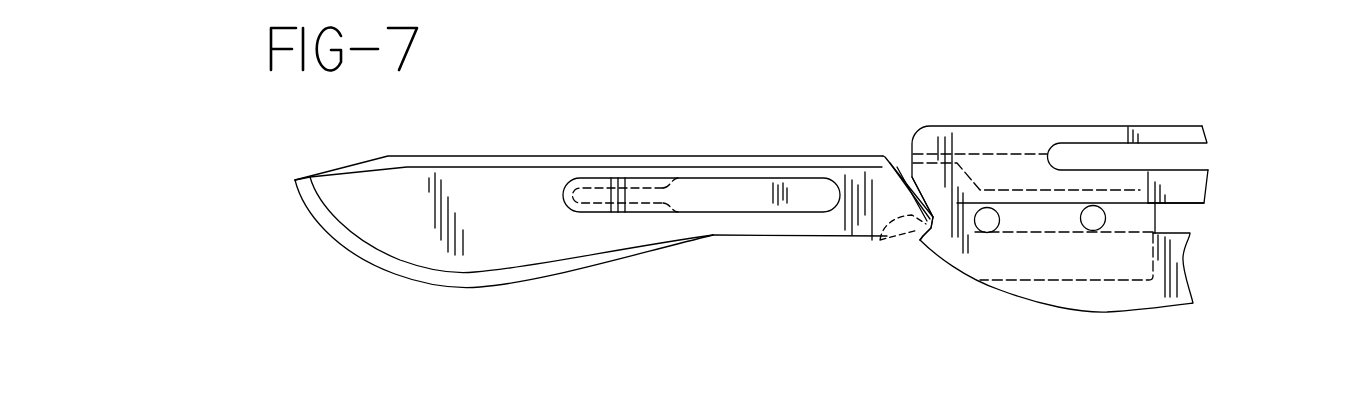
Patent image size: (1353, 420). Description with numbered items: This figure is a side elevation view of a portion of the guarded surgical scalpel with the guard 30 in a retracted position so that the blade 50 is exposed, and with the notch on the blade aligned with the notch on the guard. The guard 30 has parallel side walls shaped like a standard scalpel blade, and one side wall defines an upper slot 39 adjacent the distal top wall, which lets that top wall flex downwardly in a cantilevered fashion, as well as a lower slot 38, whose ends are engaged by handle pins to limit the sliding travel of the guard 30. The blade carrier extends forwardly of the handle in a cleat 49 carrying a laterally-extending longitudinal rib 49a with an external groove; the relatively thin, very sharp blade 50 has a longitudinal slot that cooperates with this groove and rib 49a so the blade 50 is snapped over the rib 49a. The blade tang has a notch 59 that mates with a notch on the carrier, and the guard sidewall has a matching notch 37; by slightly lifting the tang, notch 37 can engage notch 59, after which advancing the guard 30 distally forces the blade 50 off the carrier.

The guard 30 is at (1067, 130).
The notch 37 is at (933, 217).
The lower slot 38 is at (1187, 205).
The upper slot 39 is at (1190, 148).
The cleat 49 is at (757, 198).
The longitudinal rib 49a is at (697, 192).
The blade 50 is at (368, 188).
The notch 59 is at (887, 232).